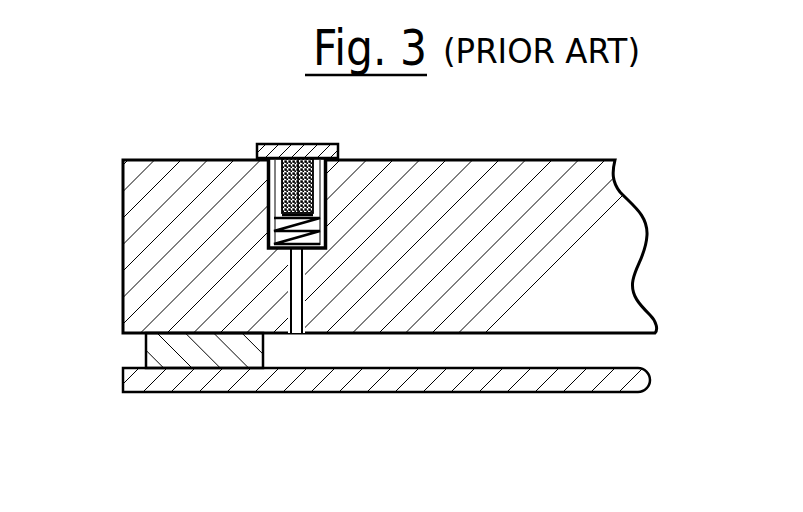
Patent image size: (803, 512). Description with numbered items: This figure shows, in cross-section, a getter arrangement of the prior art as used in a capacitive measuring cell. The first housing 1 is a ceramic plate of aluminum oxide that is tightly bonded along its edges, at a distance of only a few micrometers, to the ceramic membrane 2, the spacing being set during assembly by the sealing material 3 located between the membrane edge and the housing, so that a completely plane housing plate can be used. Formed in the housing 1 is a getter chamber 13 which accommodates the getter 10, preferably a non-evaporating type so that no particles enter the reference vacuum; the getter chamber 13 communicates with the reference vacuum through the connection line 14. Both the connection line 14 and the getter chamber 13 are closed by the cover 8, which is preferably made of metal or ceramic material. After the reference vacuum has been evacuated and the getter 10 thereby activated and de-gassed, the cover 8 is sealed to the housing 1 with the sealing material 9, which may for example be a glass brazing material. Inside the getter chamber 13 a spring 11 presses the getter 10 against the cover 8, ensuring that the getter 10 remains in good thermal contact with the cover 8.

The first housing 1 is at (150, 265).
The ceramic membrane 2 is at (630, 380).
The sealing material 3 is at (165, 349).
The cover 8 is at (305, 151).
The sealing material 9 is at (258, 157).
The getter 10 is at (305, 185).
The spring 11 is at (269, 229).
The getter chamber 13 is at (273, 197).
The connection line 14 is at (283, 302).